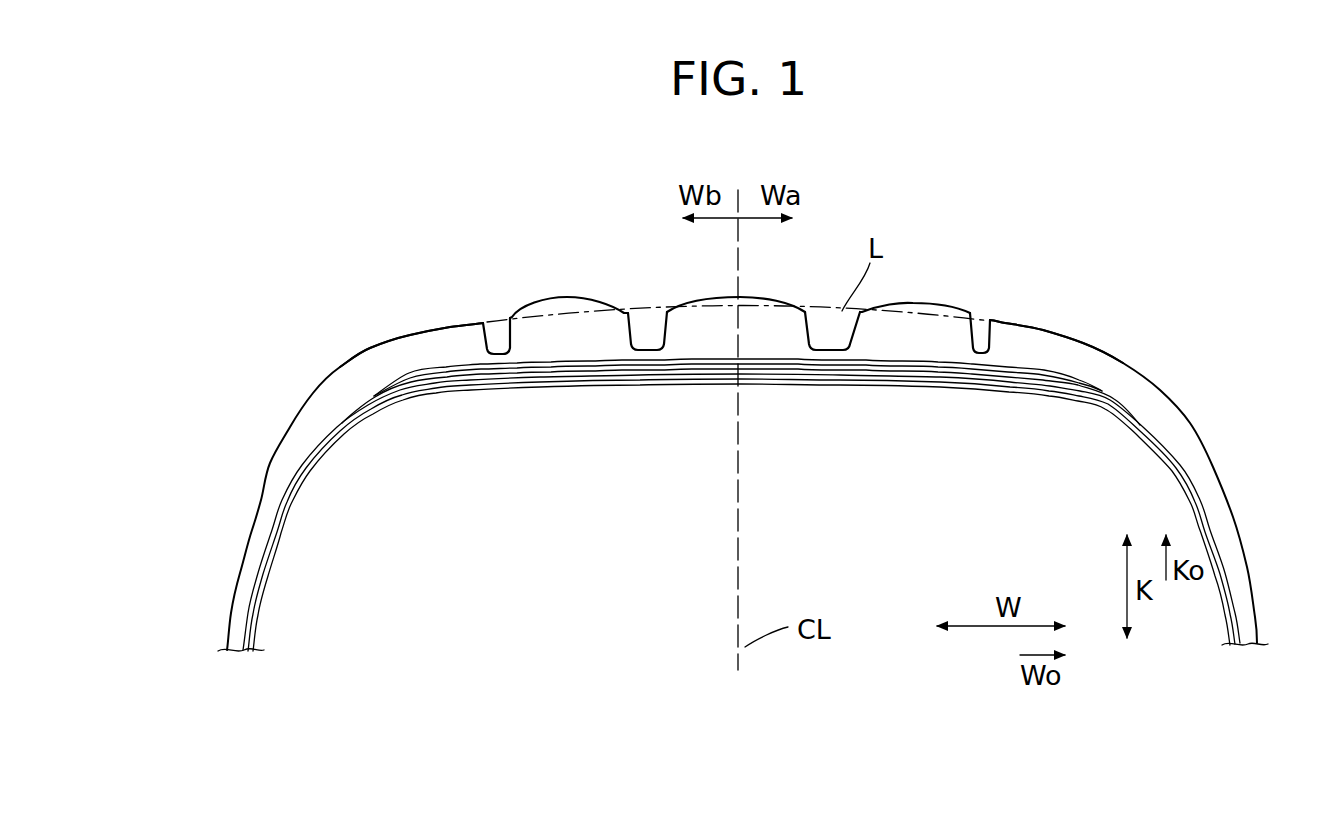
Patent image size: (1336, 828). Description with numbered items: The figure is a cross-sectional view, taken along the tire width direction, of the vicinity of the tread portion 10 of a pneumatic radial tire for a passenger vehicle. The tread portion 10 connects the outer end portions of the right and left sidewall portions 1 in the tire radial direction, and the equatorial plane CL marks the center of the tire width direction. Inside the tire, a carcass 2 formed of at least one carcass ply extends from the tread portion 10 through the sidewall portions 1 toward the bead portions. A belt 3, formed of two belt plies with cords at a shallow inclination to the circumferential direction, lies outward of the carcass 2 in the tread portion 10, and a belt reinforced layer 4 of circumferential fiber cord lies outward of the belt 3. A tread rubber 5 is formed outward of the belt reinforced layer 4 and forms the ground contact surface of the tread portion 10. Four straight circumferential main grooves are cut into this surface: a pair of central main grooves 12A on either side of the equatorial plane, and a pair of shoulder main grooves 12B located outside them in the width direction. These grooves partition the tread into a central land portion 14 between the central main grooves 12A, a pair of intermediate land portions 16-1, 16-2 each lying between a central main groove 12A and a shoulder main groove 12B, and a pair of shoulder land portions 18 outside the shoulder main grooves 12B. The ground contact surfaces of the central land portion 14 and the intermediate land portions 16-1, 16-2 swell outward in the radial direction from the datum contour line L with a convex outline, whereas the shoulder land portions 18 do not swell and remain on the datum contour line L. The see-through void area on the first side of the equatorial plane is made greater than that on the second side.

The sidewall portion 1 is at (228, 578).
The carcass 2 is at (1213, 522).
The belt 3 is at (1055, 383).
The belt reinforced layer 4 is at (1098, 382).
The tread rubber 5 is at (567, 353).
The tread portion 10 is at (824, 254).
The central main groove 12A is at (643, 345).
The shoulder main groove 12B is at (492, 357).
The central land portion 14 is at (703, 328).
The intermediate land portion 16-1 is at (930, 308).
The intermediate land portion 16-2 is at (538, 322).
The shoulder land portion 18 is at (441, 330).